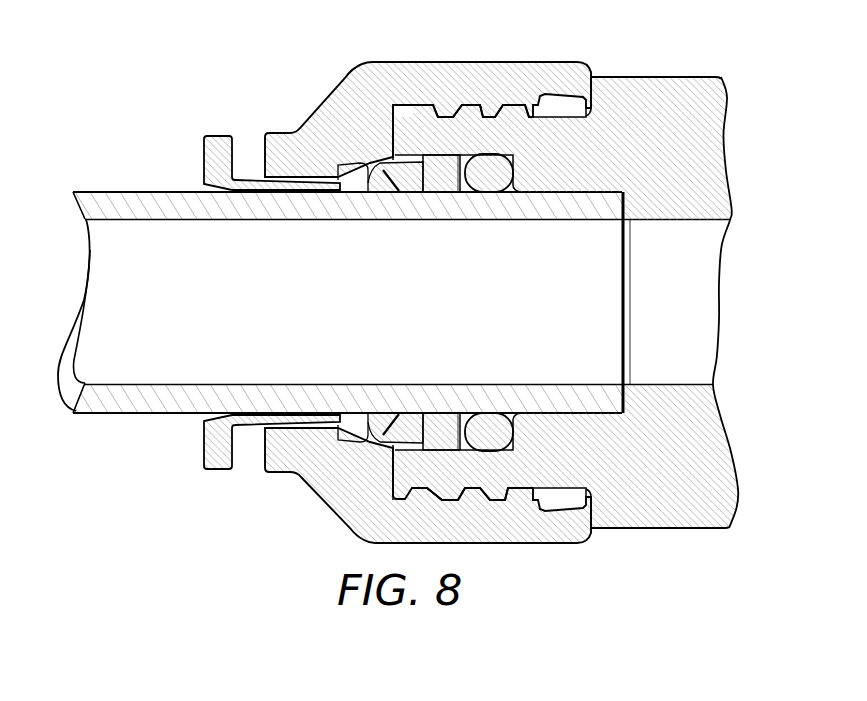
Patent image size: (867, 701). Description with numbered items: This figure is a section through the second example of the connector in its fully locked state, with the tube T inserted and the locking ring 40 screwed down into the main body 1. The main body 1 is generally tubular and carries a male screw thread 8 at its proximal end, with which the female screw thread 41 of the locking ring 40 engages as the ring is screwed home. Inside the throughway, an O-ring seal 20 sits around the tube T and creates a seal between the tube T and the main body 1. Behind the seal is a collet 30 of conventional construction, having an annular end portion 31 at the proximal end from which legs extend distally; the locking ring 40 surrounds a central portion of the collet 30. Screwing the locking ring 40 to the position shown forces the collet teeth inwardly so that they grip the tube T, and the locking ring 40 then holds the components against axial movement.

The main body 1 is at (663, 155).
The male screw thread 8 is at (468, 112).
The O-ring seal 20 is at (489, 186).
The collet 30 is at (296, 420).
The annular end portion 31 is at (218, 140).
The locking ring 40 is at (363, 141).
The female screw thread 41 is at (443, 108).
The tube T is at (590, 213).